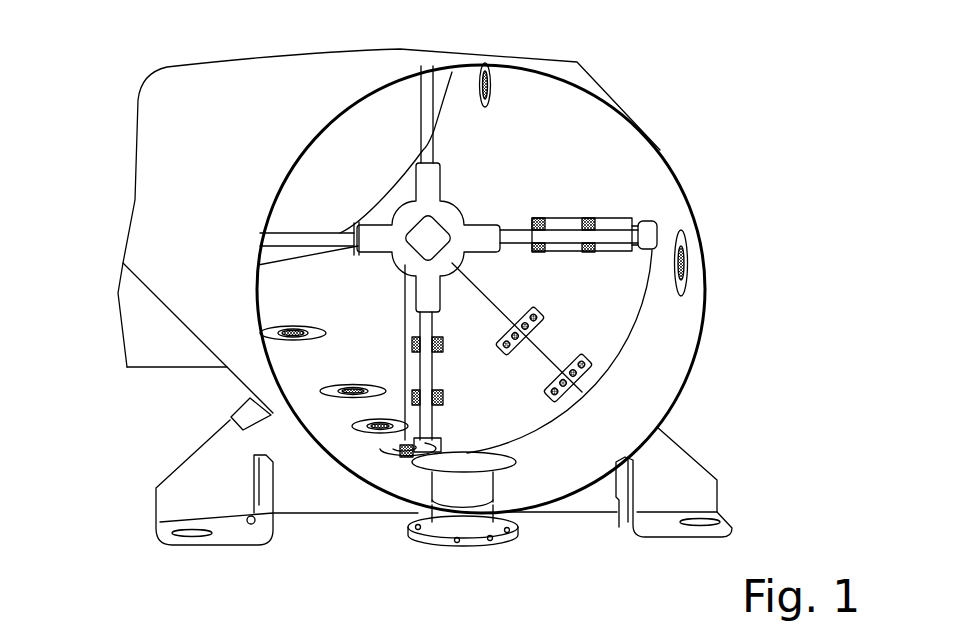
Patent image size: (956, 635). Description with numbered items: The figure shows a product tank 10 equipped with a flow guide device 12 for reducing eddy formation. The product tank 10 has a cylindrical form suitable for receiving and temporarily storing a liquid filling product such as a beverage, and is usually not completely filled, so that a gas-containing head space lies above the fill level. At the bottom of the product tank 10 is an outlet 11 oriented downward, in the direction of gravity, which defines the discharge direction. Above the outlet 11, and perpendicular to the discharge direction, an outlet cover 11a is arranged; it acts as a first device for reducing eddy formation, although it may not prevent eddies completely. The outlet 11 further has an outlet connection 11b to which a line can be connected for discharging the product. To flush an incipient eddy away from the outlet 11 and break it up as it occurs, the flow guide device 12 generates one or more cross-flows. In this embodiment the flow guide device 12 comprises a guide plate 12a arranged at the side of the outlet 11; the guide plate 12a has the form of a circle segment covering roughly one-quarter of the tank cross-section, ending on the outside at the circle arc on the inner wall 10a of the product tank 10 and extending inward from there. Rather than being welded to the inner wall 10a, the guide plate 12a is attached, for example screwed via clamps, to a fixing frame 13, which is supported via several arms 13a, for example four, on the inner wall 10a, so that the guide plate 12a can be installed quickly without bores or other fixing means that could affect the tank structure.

The product tank 10 is at (673, 112).
The inner wall 10a is at (581, 132).
The outlet 11 is at (532, 537).
The outlet cover 11a is at (467, 463).
The outlet connection 11b is at (490, 550).
The flow guide device 12 is at (630, 345).
The guide plate 12a is at (567, 307).
The fixing frame 13 is at (365, 193).
The arms 13a is at (433, 133).